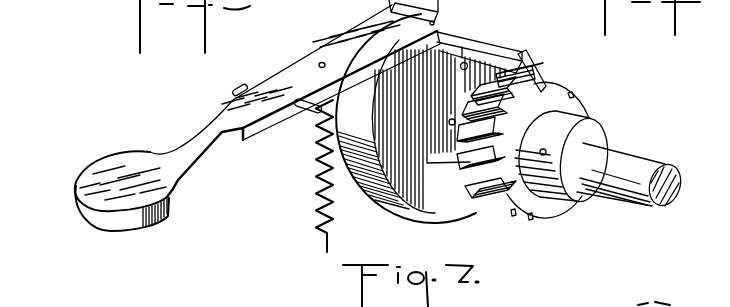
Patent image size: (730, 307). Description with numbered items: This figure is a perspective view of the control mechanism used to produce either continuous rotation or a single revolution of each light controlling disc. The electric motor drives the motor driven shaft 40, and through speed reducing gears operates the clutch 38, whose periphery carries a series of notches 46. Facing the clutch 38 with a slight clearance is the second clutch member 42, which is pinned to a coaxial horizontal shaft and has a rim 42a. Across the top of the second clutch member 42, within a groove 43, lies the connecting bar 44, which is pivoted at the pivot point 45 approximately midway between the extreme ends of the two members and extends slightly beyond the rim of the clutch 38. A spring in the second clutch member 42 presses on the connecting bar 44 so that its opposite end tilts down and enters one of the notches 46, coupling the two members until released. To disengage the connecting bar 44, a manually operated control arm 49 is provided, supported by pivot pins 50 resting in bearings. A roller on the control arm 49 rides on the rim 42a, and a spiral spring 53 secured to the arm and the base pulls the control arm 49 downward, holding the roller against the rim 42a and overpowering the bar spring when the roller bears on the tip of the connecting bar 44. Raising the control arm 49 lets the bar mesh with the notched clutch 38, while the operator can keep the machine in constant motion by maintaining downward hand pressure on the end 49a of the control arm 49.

The clutch 38 is at (563, 107).
The motor driven shaft 40 is at (641, 157).
The second clutch member 42 is at (429, 212).
The rim 42a is at (363, 105).
The groove 43 is at (502, 43).
The connecting bar 44 is at (530, 73).
The pivot point 45 is at (462, 47).
The notches 46 is at (573, 95).
The control arm 49 is at (222, 112).
The end of arm 49a is at (82, 182).
The pivot pins 50 is at (242, 86).
The spiral spring 53 is at (318, 198).